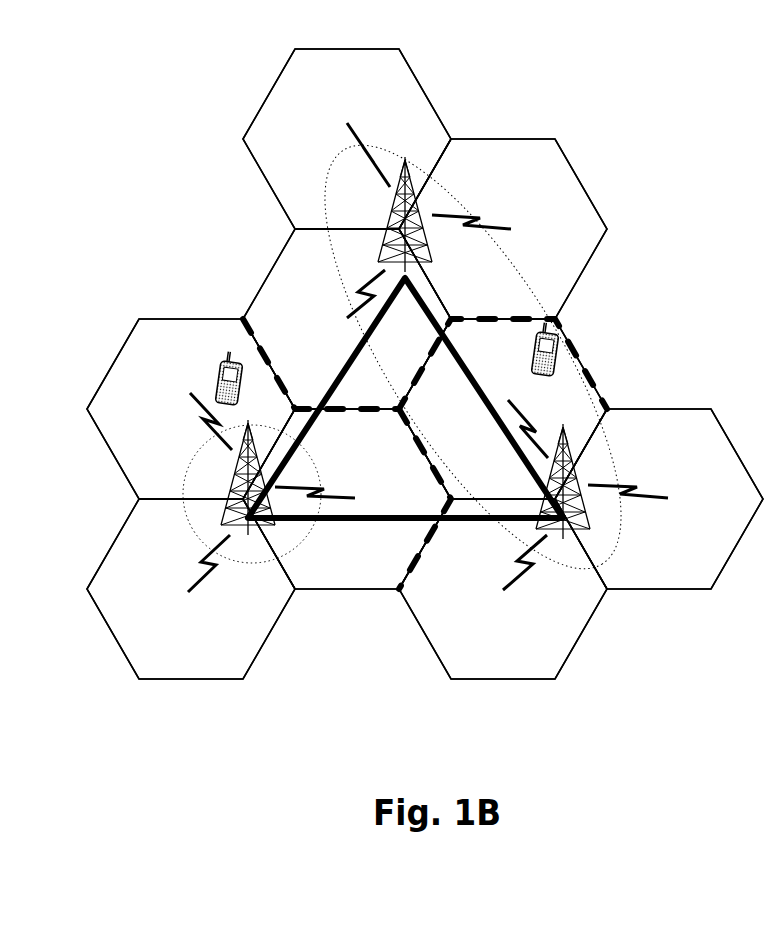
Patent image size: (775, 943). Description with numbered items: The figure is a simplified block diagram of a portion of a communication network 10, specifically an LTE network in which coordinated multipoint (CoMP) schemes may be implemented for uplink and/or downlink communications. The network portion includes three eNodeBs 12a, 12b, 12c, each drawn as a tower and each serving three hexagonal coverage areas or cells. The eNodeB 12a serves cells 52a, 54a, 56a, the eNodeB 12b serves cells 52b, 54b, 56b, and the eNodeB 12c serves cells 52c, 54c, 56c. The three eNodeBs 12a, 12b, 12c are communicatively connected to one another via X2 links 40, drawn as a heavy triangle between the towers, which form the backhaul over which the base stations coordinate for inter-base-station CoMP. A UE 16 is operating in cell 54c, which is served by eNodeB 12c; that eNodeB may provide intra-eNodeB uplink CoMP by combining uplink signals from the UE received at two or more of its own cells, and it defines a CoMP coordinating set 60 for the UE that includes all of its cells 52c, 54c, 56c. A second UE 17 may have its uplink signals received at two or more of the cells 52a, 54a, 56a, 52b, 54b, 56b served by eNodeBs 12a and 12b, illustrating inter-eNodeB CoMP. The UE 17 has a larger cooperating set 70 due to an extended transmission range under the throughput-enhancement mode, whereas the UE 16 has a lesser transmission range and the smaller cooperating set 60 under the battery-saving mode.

The communication network 10 is at (181, 98).
The eNodeB 12a is at (427, 235).
The eNodeB 12b is at (587, 510).
The eNodeB 12c is at (228, 513).
The UE 16 is at (218, 358).
The UE 17 is at (560, 375).
The X2 links 40 is at (357, 360).
The cell 52a is at (493, 163).
The cell 52b is at (648, 433).
The cell 52c is at (328, 442).
The cell 54a is at (332, 76).
The cell 54b is at (490, 343).
The cell 54c is at (173, 343).
The cell 56a is at (330, 257).
The cell 56b is at (493, 673).
The cell 56c is at (173, 673).
The CoMP coordinating set 60 is at (310, 533).
The cooperating set 70 is at (513, 255).